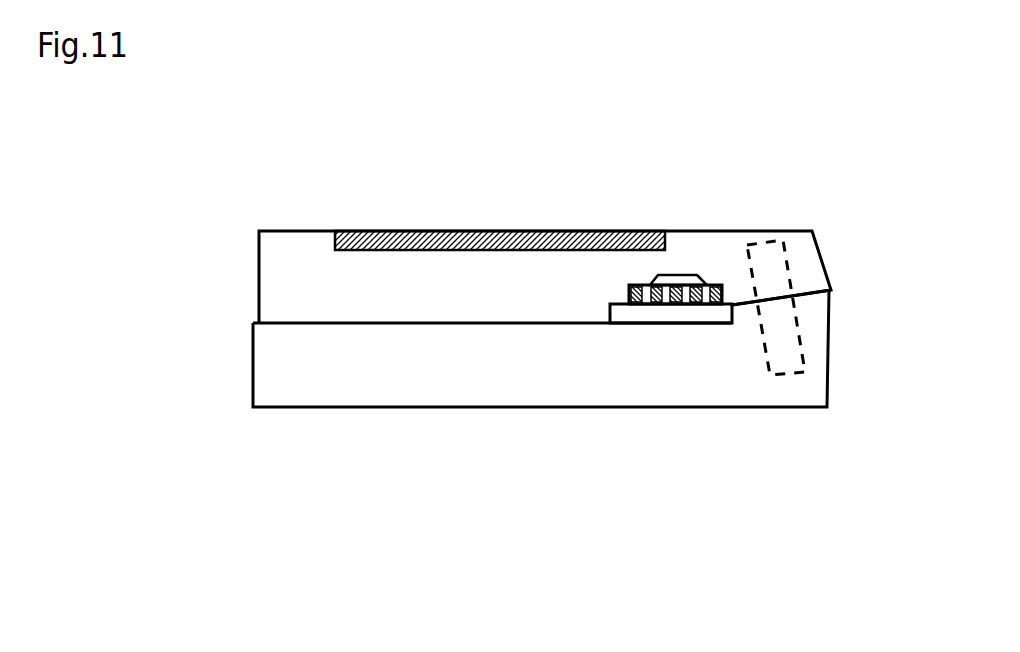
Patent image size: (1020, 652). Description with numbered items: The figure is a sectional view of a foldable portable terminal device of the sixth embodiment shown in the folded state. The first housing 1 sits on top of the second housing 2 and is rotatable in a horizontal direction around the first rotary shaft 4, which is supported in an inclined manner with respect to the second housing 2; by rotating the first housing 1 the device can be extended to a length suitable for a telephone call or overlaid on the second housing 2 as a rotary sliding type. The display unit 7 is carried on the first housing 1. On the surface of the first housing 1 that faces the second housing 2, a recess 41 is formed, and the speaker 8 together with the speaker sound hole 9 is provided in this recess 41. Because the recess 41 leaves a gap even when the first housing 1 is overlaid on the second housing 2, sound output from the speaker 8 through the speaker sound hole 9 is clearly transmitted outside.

The first housing 1 is at (297, 260).
The second housing 2 is at (340, 393).
The first rotary shaft 4 is at (787, 268).
The display unit 7 is at (393, 260).
The speaker 8 is at (672, 275).
The speaker sound hole 9 is at (685, 304).
The recess 41 is at (672, 333).